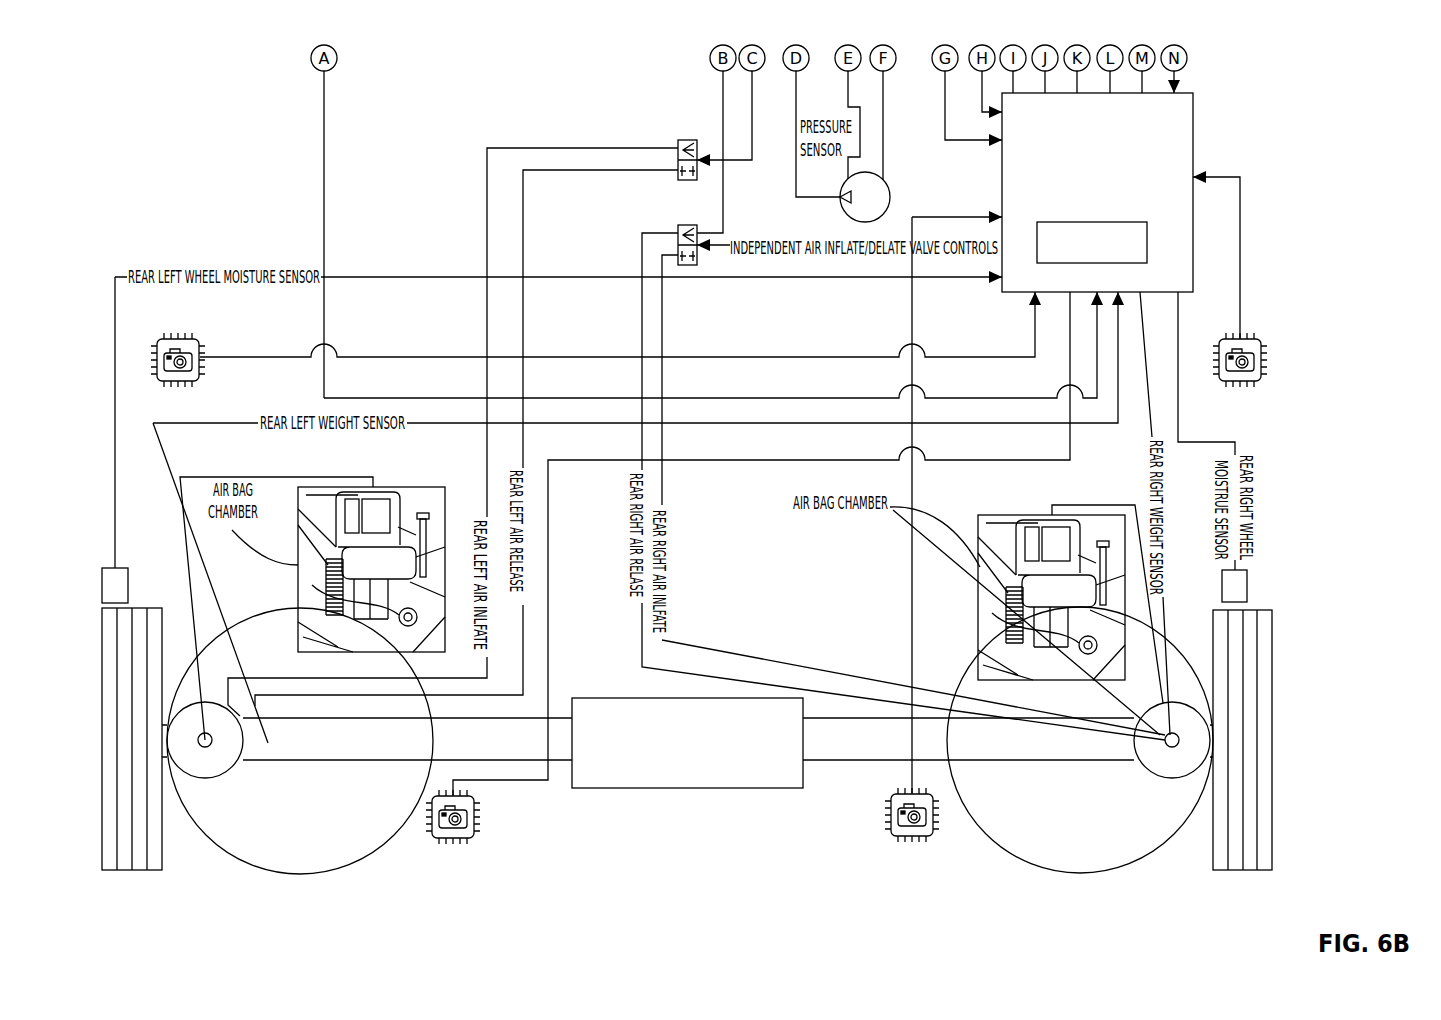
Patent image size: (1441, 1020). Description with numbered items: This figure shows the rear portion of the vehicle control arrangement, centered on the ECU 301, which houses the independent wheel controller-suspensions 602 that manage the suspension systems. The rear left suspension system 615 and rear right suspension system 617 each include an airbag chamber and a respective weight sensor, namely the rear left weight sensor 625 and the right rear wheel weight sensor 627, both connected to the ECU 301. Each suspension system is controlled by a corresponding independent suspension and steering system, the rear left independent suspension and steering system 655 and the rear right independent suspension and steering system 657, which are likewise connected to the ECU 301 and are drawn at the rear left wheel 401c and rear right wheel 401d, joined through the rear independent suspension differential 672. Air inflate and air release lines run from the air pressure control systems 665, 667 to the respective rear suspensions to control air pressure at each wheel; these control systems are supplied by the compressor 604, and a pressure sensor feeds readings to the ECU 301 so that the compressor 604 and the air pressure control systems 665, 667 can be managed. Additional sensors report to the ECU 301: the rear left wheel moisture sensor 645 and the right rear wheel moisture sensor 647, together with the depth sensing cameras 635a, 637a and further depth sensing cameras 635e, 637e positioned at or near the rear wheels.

The ECU 301 is at (1193, 120).
The independent wheel controller-suspensions 602 is at (1092, 242).
The compressor 604 is at (890, 184).
The air pressure control system 665 is at (678, 147).
The air pressure control system 667 is at (678, 230).
The depth sensing camera 635a is at (200, 345).
The depth sensing camera 637a is at (1255, 337).
The rear left lower depth sensing camera 635e is at (475, 815).
The rear right lower depth sensing camera 637e is at (890, 815).
The suspension system 615 is at (428, 492).
The weight sensor 625 is at (412, 445).
The suspension system 617 is at (1010, 515).
The right rear wheel weight sensor 627 is at (1052, 463).
The rear left wheel moisture sensor 645 is at (128, 585).
The right rear wheel moisture sensor 647 is at (1247, 585).
The independent suspension and steering system 655 is at (205, 778).
The independent suspension and steering system 657 is at (1160, 833).
The rear independent suspension differential 672 is at (687, 788).
The rear left wheel 401c is at (127, 870).
The rear right wheel 401d is at (1255, 870).